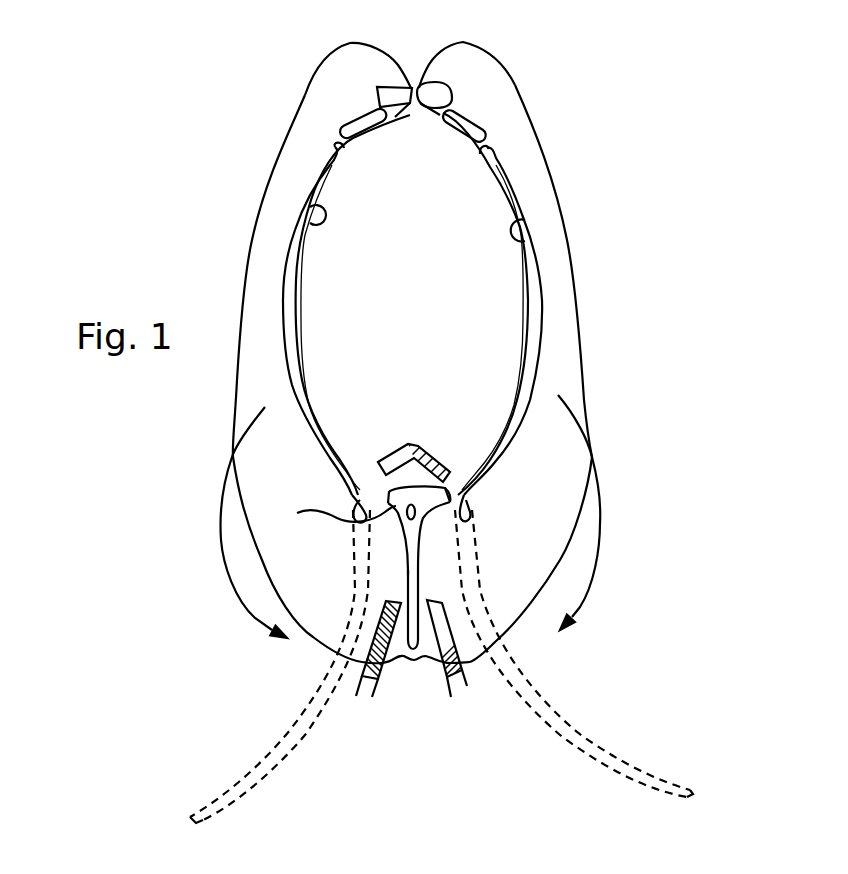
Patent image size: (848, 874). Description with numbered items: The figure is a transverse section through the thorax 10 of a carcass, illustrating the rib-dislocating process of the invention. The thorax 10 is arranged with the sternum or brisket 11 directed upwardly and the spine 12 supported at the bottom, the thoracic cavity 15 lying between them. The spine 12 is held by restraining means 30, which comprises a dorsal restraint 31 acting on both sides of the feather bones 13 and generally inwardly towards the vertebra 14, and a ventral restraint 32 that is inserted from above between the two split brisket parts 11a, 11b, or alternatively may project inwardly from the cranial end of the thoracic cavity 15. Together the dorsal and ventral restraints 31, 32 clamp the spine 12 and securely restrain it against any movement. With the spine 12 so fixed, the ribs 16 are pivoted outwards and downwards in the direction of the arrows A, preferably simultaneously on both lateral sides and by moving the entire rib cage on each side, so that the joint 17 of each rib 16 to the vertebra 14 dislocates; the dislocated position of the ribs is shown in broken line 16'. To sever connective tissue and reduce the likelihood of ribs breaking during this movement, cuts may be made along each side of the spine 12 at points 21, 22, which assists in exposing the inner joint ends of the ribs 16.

The thorax 10 is at (605, 304).
The sternum or brisket 11 is at (462, 66).
The split brisket part 11a is at (390, 90).
The split brisket part 11b is at (440, 87).
The spine 12 is at (382, 552).
The feather bones 13 is at (412, 568).
The vertebra 14 is at (297, 513).
The thoracic cavity 15 is at (423, 274).
The ribs 16 is at (424, 301).
The dislocated rib position 16' is at (441, 666).
The joint 17 is at (440, 547).
The cut point 21 is at (354, 468).
The cut point 22 is at (463, 470).
The restraining means 30 is at (390, 420).
The dorsal restraint 31 is at (448, 668).
The ventral restraint 32 is at (417, 447).